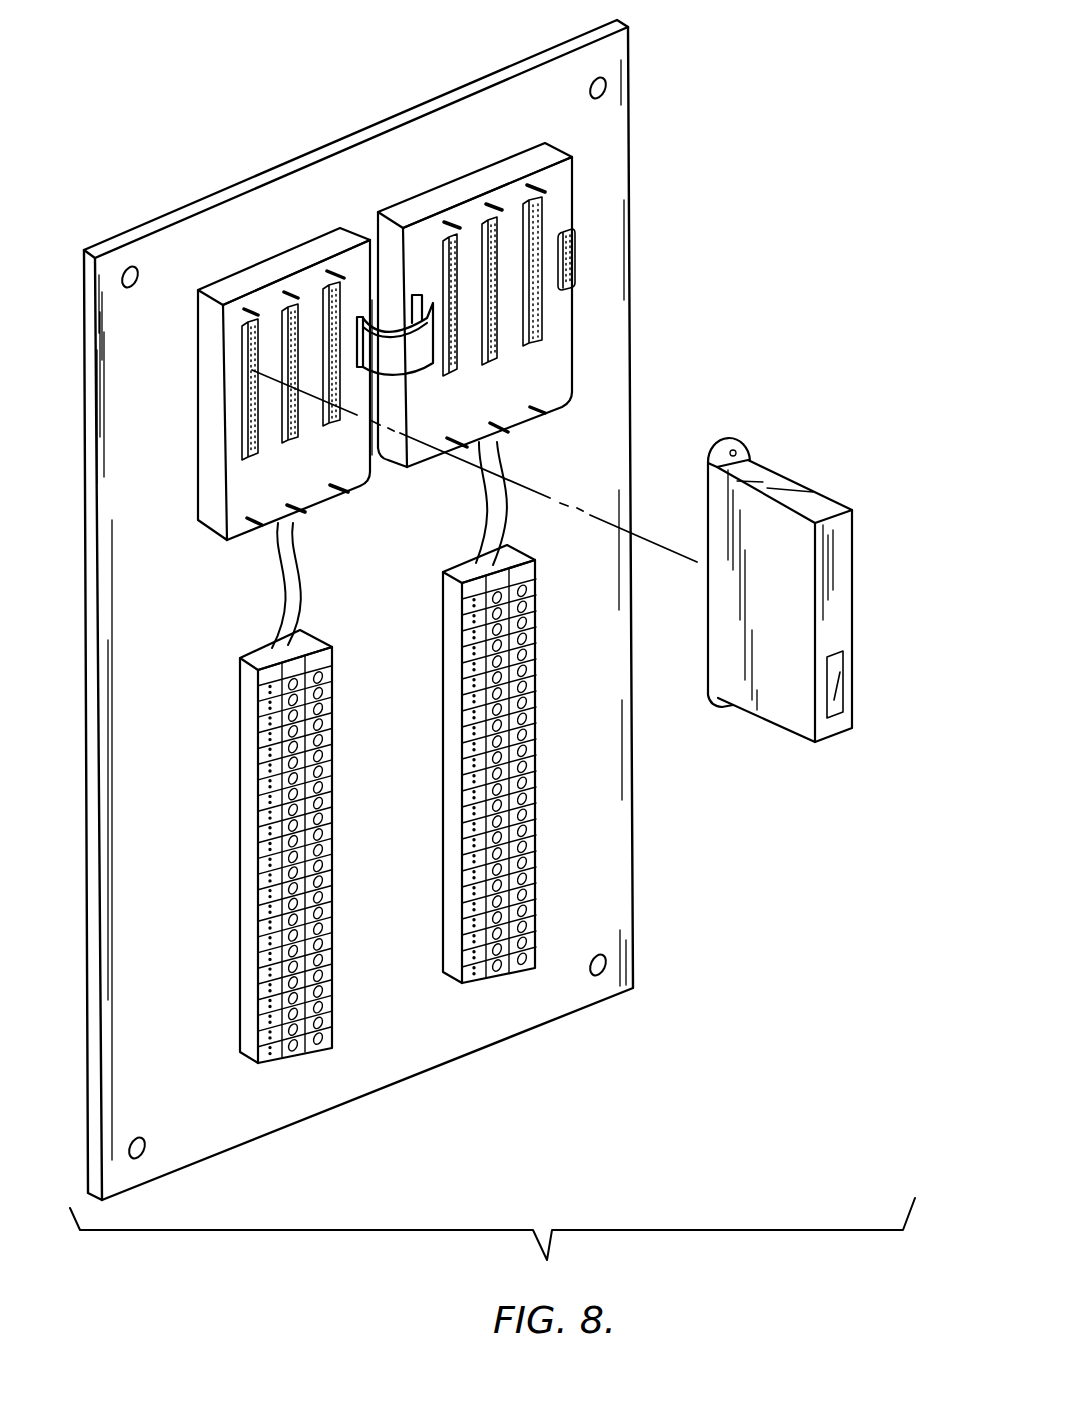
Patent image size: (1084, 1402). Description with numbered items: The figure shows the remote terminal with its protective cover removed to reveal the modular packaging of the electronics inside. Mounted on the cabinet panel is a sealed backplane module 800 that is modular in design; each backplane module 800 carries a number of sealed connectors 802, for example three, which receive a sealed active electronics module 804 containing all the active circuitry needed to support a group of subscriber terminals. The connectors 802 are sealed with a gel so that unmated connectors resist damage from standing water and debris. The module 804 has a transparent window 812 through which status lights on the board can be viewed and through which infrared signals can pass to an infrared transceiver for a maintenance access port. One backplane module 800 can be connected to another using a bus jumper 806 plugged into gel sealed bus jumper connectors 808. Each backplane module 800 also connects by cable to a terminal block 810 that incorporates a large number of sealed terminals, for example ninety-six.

The backplane module 800 is at (572, 157).
The sealed connector 802 is at (542, 227).
The sealed active electronics module 804 is at (809, 618).
The bus jumper 806 is at (427, 367).
The bus jumper connector 808 is at (575, 253).
The terminal block 810 is at (300, 1060).
The transparent window 812 is at (833, 655).